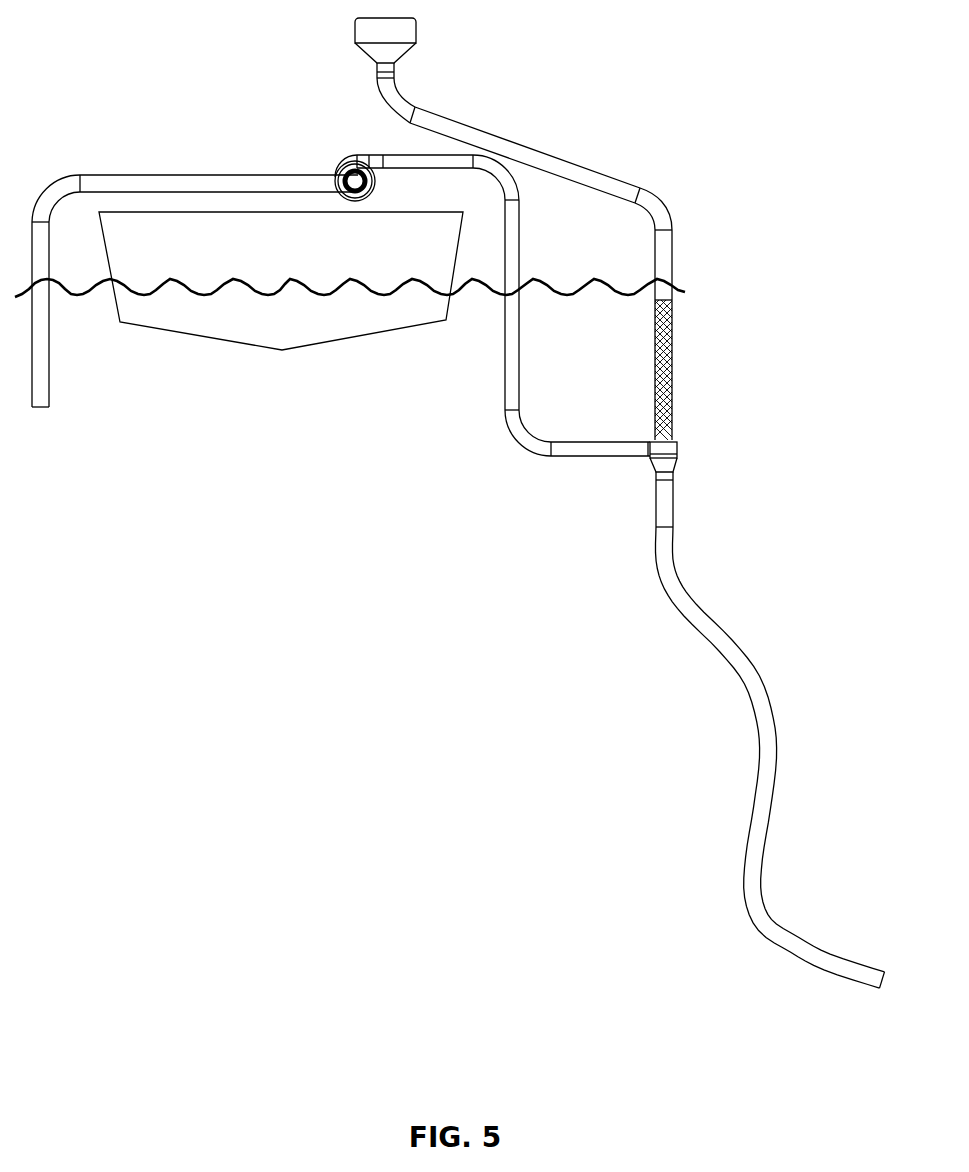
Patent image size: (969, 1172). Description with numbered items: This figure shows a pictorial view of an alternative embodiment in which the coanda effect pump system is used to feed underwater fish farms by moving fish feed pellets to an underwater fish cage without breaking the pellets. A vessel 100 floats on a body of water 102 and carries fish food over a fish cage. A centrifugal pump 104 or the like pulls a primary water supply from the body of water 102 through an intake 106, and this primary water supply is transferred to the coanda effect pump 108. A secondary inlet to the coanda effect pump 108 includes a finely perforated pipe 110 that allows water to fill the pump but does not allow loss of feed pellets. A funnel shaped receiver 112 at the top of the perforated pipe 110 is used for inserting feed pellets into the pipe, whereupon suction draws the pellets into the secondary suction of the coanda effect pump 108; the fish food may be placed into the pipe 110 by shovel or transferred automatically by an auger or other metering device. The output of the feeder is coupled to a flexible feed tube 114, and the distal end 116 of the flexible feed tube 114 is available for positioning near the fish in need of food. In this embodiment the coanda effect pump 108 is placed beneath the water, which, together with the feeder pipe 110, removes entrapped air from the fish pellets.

The vessel 100 is at (158, 328).
The body of water 102 is at (276, 287).
The centrifugal pump 104 is at (338, 162).
The intake 106 is at (50, 408).
The coanda effect pump 108 is at (643, 472).
The finely perforated pipe 110 is at (677, 365).
The funnel shaped receiver 112 is at (420, 36).
The flexible feed tube 114 is at (765, 680).
The distal end 116 is at (883, 968).